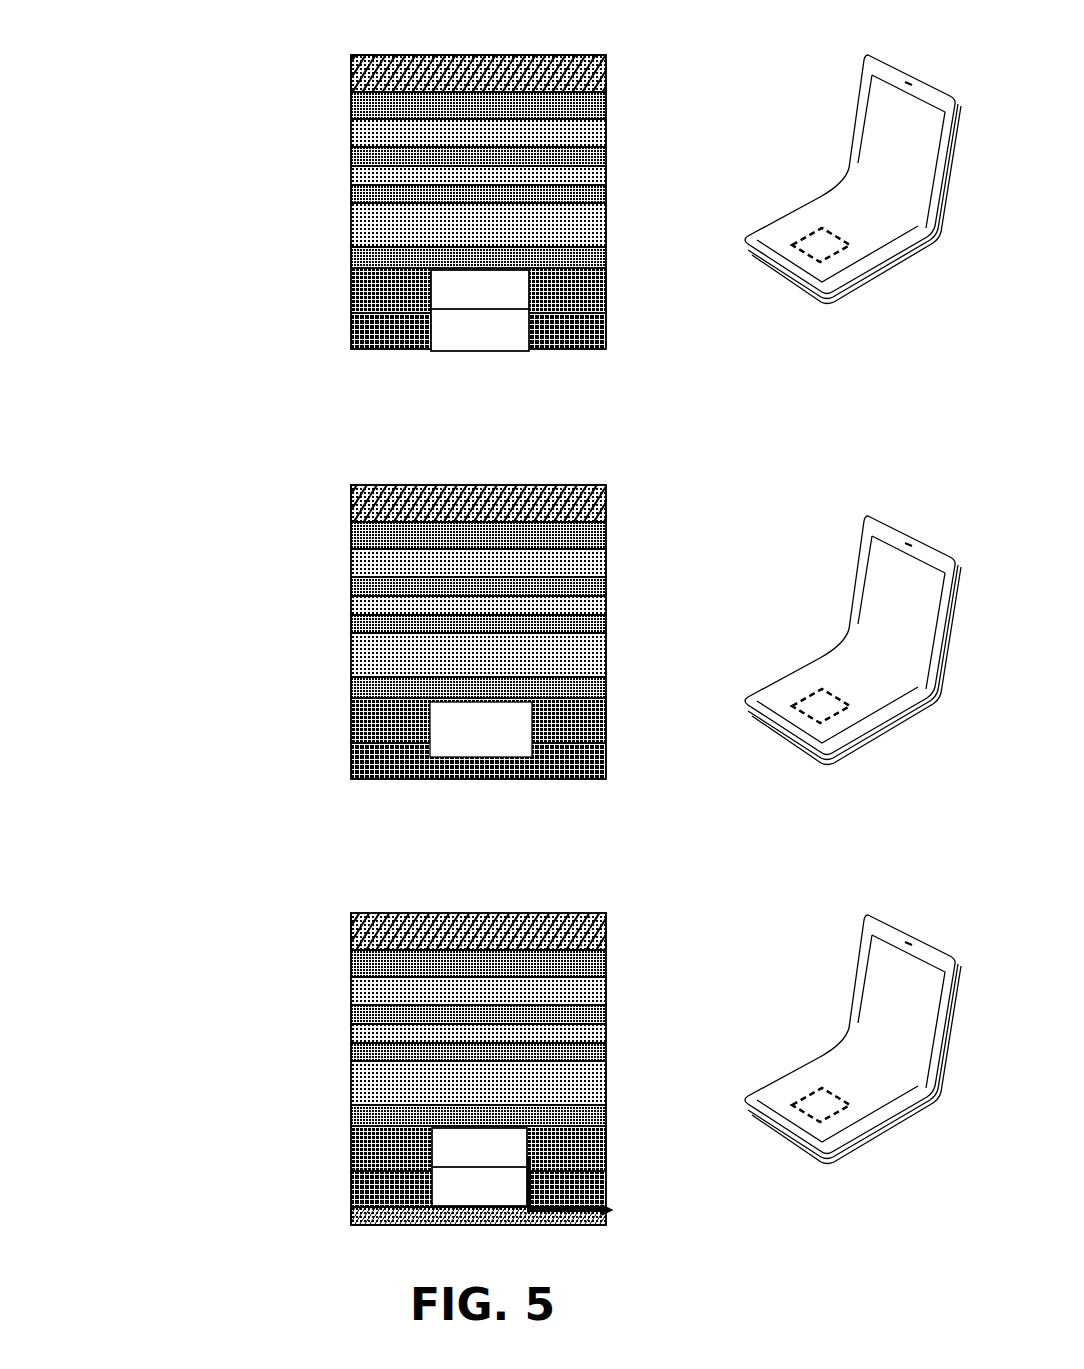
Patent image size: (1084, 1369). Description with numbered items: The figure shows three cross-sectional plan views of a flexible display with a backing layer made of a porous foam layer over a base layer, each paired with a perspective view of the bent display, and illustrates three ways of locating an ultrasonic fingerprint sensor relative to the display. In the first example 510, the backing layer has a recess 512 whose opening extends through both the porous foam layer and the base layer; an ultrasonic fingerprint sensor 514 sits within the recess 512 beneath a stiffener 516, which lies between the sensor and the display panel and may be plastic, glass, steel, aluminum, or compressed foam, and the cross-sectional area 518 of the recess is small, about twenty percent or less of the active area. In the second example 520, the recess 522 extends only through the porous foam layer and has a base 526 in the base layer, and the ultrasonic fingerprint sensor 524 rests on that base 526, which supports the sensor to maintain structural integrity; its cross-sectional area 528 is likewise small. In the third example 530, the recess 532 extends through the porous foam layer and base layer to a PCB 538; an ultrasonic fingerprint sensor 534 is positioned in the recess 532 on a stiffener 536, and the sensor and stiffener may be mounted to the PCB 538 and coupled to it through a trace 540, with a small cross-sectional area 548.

The example 510 is at (158, 37).
The recess 512 is at (438, 337).
The ultrasonic fingerprint sensor 514 is at (480, 330).
The stiffener 516 is at (480, 289).
The cross-sectional area 518 is at (835, 252).
The example 520 is at (158, 465).
The recess 522 is at (412, 737).
The ultrasonic fingerprint sensor 524 is at (481, 729).
The base 526 is at (492, 766).
The cross-sectional area 528 is at (835, 713).
The example 530 is at (158, 910).
The recess 532 is at (454, 1195).
The ultrasonic fingerprint sensor 534 is at (479, 1147).
The stiffener 536 is at (479, 1186).
The PCB 538 is at (513, 1218).
The trace 540 is at (612, 1210).
The cross-sectional area 548 is at (835, 1113).